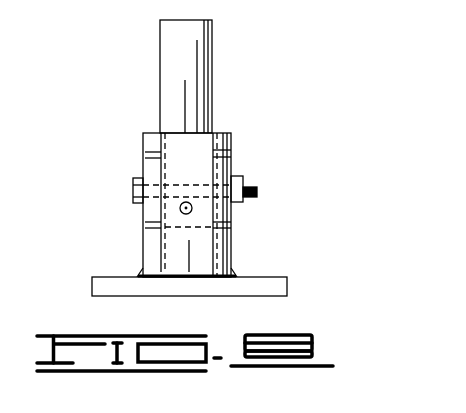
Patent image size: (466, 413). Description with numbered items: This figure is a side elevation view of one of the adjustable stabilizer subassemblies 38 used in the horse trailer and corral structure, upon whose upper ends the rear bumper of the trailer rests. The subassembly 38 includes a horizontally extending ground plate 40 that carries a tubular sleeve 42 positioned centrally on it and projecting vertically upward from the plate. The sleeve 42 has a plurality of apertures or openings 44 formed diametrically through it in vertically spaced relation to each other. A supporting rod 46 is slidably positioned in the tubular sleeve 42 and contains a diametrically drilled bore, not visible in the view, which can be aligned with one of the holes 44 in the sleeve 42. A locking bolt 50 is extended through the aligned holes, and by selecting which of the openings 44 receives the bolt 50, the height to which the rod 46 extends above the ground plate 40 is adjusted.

The adjustable stabilizer subassembly 38 is at (233, 211).
The ground plate 40 is at (261, 283).
The tubular sleeve 42 is at (176, 252).
The apertures 44 is at (147, 157).
The supporting rod 46 is at (191, 43).
The locking bolt 50 is at (133, 192).